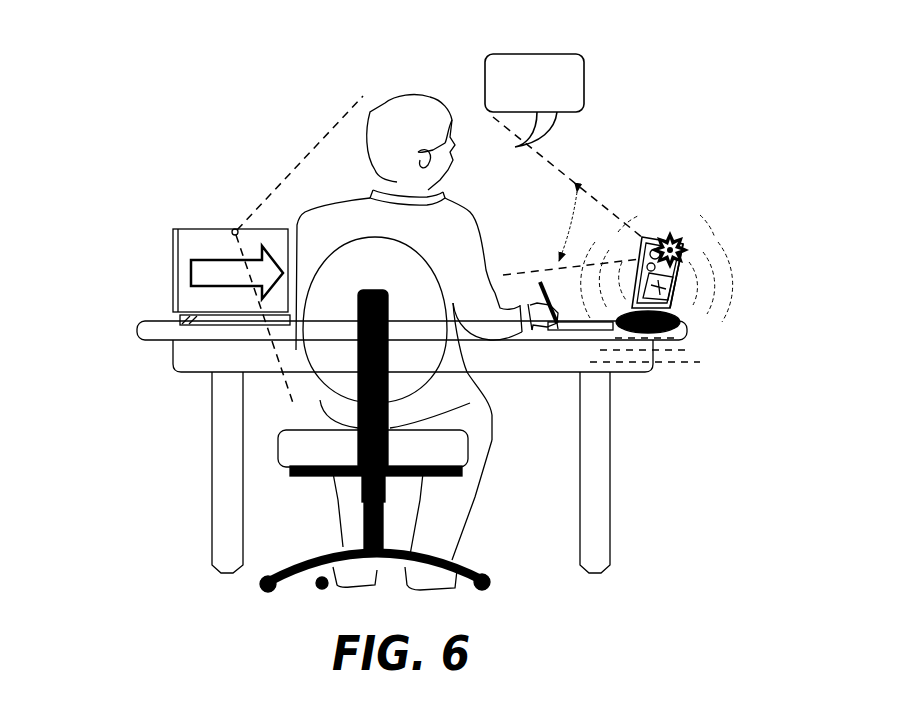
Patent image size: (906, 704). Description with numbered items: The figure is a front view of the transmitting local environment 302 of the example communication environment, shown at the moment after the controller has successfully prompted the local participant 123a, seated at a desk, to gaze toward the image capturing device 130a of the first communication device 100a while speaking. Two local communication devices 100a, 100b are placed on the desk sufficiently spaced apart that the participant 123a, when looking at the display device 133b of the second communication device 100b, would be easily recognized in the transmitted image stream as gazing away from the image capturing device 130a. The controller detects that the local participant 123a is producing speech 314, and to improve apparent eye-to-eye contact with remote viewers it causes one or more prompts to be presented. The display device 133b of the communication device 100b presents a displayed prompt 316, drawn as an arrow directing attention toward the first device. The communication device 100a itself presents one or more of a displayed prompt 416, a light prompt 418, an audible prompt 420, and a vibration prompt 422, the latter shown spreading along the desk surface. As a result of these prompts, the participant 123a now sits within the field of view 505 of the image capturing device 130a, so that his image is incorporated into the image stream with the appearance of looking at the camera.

The communication device 100a is at (660, 240).
The communication device 100b is at (173, 270).
The local participant 123a is at (332, 200).
The image capturing device 130a is at (645, 237).
The display device 133b is at (218, 245).
The local environment 302 is at (200, 156).
The speech 314 is at (550, 97).
The displayed prompt 316 is at (218, 268).
The displayed prompt 416 is at (672, 272).
The light prompt 418 is at (690, 242).
The audible prompt 420 is at (736, 302).
The vibration prompt 422 is at (661, 372).
The FOV 505 is at (568, 196).